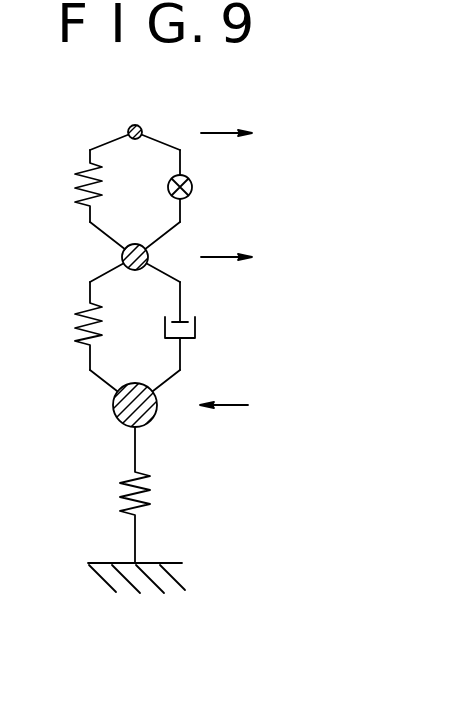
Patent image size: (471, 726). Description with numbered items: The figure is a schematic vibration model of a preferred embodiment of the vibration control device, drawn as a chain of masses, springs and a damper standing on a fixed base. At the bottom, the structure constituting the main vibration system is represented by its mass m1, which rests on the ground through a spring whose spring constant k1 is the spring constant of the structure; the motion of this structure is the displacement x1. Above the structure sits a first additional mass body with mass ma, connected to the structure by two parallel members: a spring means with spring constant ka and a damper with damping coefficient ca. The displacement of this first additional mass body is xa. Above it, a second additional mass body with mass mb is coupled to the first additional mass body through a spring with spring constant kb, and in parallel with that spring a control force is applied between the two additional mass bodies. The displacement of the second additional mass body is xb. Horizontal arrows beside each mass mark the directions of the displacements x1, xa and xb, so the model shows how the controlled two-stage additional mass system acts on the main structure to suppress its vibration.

The mass of second additional mass body mb is at (130, 117).
The spring constant to second additional mass body kb is at (68, 186).
The displacement of second additional mass body xb is at (243, 133).
The mass of first additional mass body ma is at (114, 257).
The displacement of first additional mass body xa is at (242, 258).
The spring constant of spring means to first additional mass body ka is at (67, 326).
The damping coefficient to first additional mass body ca is at (200, 326).
The displacement of structure x1 is at (226, 421).
The mass of structure m1 is at (119, 409).
The spring constant of structure k1 is at (112, 495).